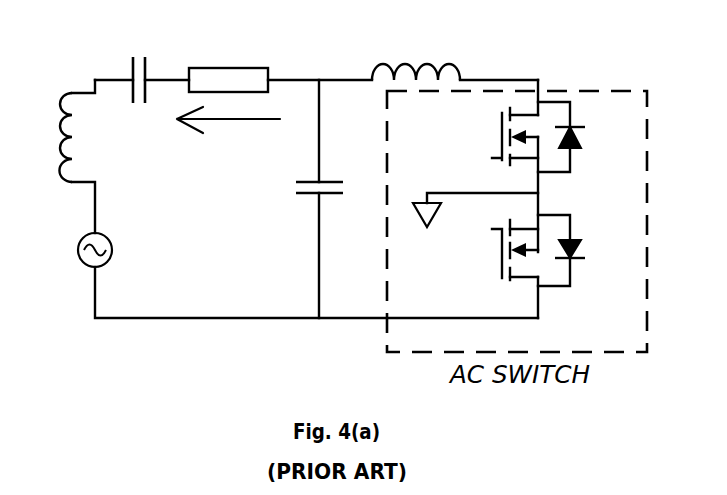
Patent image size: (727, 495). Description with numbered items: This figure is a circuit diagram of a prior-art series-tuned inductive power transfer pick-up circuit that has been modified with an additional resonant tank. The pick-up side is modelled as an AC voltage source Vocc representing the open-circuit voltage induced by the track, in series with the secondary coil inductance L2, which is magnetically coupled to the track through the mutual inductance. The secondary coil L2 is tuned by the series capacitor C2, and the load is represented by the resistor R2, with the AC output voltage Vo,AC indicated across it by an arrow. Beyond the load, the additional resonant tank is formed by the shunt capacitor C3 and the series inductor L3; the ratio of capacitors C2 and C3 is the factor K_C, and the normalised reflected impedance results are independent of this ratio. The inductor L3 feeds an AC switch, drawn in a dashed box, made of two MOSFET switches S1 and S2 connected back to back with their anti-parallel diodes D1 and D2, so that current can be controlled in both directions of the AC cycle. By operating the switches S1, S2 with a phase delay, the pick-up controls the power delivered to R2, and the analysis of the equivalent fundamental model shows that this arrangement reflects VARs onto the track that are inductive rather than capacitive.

The secondary coil inductance L2 is at (50, 137).
The capacitor C2 is at (136, 59).
The resistor R2 is at (228, 54).
The AC output voltage Vo,AC is at (228, 140).
The inductor L3 is at (416, 48).
The capacitor C3 is at (328, 163).
The open-circuit voltage source Vocc is at (70, 250).
The first switch S1 is at (496, 136).
The first diode D1 is at (580, 137).
The second switch S2 is at (496, 250).
The second diode D2 is at (582, 250).